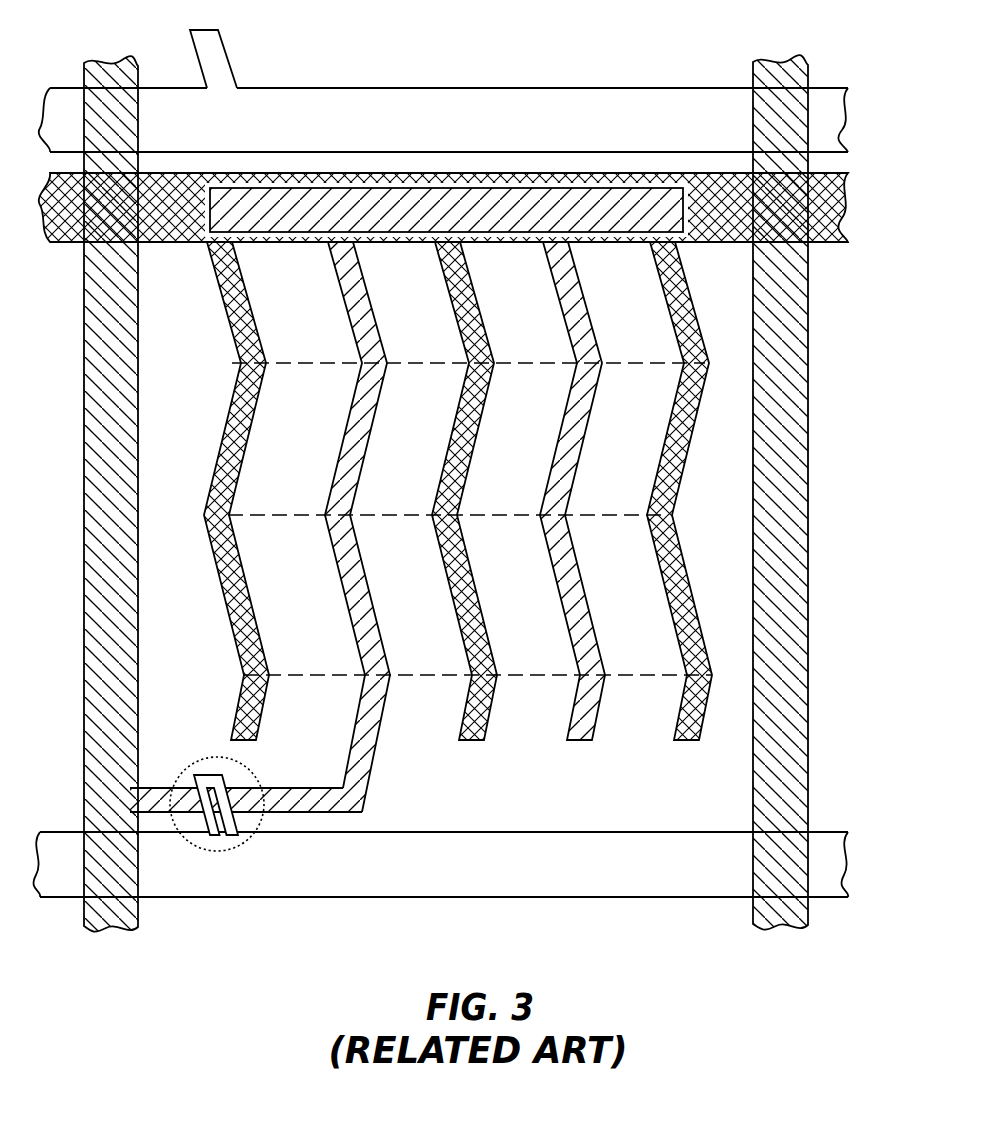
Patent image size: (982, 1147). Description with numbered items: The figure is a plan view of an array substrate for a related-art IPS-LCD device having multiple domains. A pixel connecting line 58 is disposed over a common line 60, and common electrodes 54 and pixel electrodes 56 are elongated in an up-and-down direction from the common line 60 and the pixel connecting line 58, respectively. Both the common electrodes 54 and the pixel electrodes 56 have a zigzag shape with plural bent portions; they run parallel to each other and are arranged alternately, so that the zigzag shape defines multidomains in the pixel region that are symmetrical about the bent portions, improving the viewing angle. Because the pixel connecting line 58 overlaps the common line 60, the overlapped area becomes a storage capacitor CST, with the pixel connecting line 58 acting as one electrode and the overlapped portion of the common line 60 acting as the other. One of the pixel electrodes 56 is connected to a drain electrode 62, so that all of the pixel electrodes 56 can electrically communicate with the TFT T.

The common electrodes 54 is at (240, 468).
The pixel electrodes 56 is at (357, 468).
The pixel connecting line 58 is at (500, 203).
The common line 60 is at (847, 200).
The drain electrode 62 is at (320, 803).
The TFT T is at (217, 851).
The storage capacitor CST is at (600, 175).